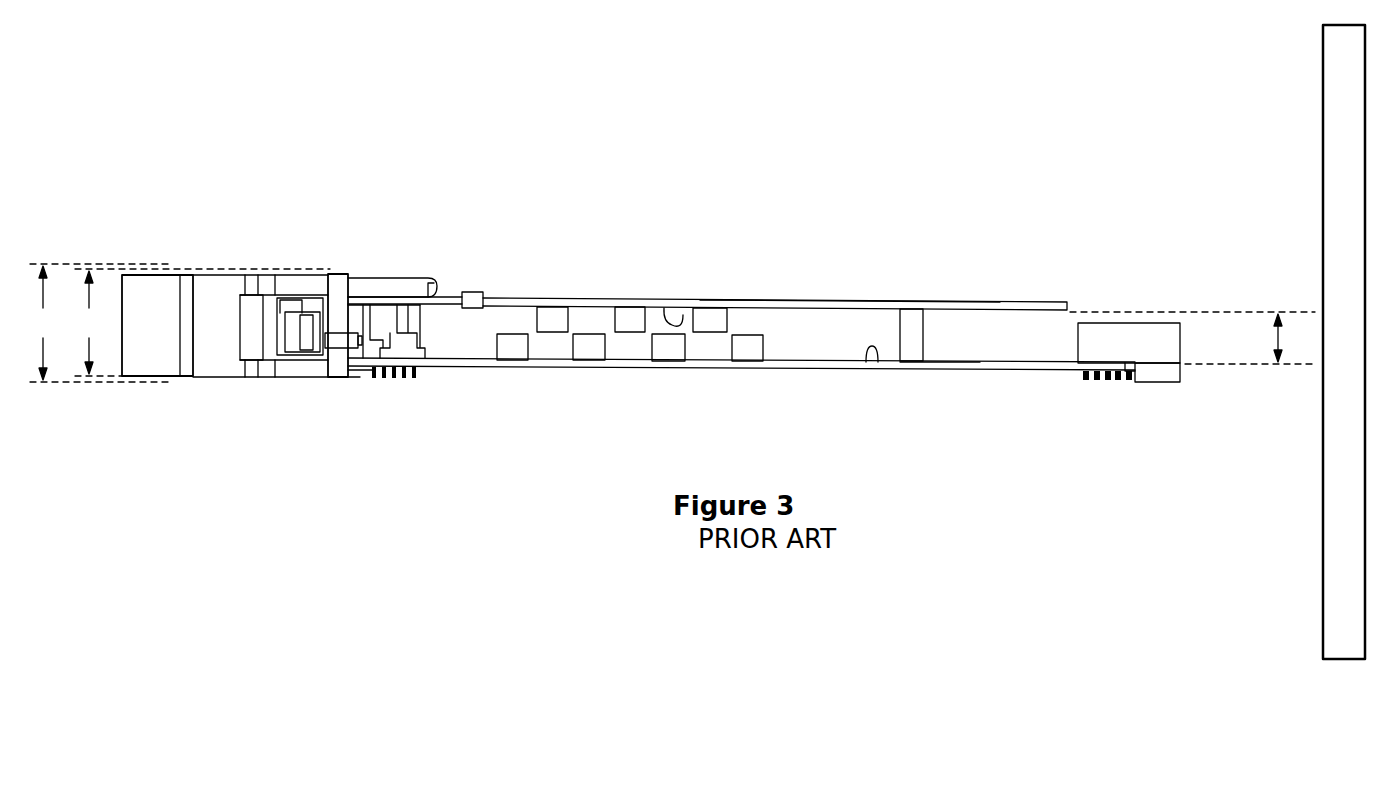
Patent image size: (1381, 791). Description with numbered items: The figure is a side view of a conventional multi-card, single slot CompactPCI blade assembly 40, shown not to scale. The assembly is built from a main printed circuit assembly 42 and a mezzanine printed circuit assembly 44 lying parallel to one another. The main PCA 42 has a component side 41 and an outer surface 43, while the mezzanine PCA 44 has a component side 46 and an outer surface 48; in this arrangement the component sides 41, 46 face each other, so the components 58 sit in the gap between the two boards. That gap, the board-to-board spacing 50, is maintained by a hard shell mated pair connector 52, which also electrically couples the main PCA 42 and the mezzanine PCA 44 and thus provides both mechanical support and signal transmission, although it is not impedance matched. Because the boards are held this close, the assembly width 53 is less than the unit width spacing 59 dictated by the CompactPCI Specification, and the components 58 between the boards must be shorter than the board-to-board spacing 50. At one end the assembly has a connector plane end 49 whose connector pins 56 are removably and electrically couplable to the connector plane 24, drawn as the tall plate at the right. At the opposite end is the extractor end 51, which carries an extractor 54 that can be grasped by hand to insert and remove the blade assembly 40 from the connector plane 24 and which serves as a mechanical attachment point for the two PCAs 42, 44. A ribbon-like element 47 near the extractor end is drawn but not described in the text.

The connector plane 24 is at (1323, 121).
The multi-card, single slot CompactPCI blade assembly 40 is at (427, 208).
The component side of main PCA 41 is at (866, 362).
The main printed circuit assembly 42 is at (800, 378).
The outer surface of main PCA 43 is at (940, 371).
The mezzanine printed circuit assembly 44 is at (795, 289).
The component side of mezzanine PCA 46 is at (683, 315).
The connector ribbon 47 is at (437, 288).
The outer surface of mezzanine PCA 48 is at (590, 297).
The connector plane end 49 is at (1092, 408).
The board-to-board spacing 50 is at (1194, 338).
The extractor end 51 is at (307, 416).
The hard shell mated pair connector 52 is at (925, 330).
The assembly width 53 is at (202, 322).
The extractor 54 is at (210, 378).
The connector pins 56 is at (1163, 383).
The components 58 is at (658, 350).
The unit width spacing 59 is at (100, 323).